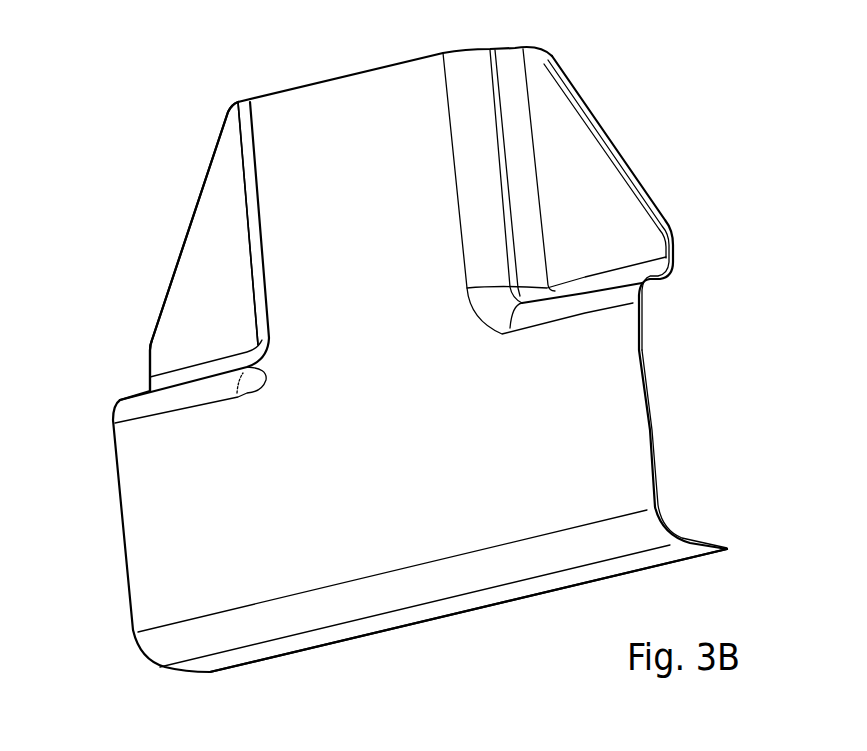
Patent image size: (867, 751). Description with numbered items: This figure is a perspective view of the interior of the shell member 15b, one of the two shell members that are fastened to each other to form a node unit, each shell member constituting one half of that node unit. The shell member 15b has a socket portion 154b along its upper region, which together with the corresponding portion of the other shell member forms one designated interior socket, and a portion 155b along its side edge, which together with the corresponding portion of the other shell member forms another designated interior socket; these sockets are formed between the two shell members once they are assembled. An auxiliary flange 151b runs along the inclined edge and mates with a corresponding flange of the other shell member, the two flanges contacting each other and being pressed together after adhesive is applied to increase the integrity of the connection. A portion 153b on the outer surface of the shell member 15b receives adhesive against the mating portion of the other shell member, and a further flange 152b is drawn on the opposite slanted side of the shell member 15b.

The shell member 15b is at (172, 175).
The auxiliary flange 151b is at (623, 153).
The slanted side flange 152b is at (155, 318).
The portion 153b is at (688, 552).
The socket portion 154b is at (380, 63).
The socket portion 155b is at (655, 455).